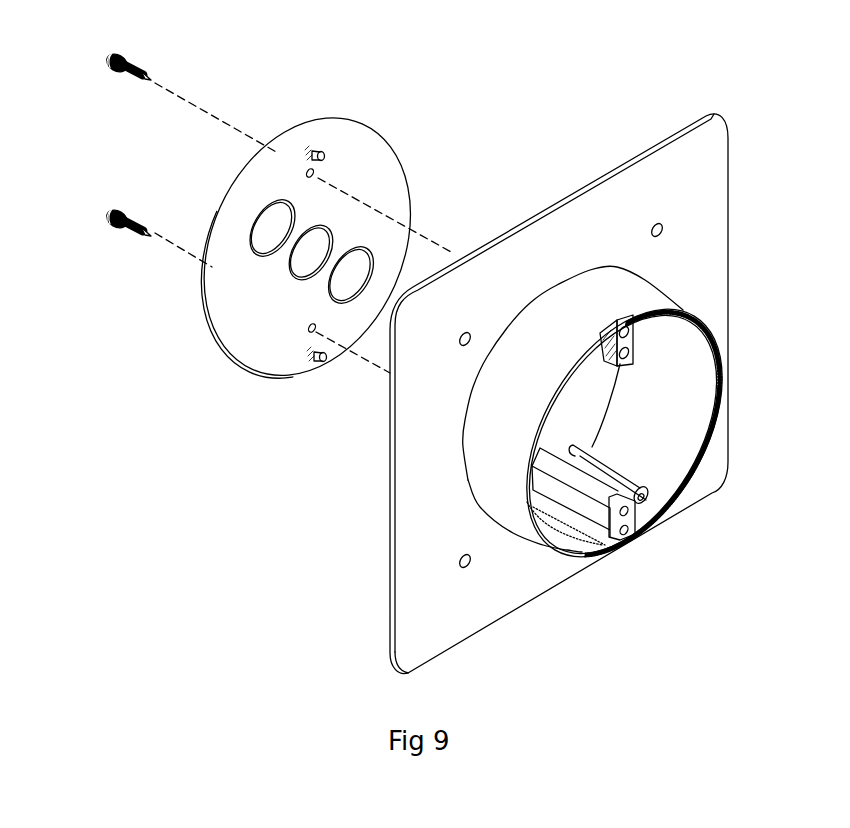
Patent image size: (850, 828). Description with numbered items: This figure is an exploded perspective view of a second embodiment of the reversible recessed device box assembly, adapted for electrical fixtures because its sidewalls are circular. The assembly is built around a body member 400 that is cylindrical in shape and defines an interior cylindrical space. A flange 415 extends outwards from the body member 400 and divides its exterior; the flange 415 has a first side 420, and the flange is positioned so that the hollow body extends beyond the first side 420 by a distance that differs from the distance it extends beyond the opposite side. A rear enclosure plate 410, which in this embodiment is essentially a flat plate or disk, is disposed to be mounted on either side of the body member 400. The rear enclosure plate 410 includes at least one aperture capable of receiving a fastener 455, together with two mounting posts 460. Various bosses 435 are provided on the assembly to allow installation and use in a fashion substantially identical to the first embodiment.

The body member 400 is at (575, 163).
The rear enclosure plate 410 is at (245, 388).
The flange 415 is at (432, 603).
The first side 420 is at (728, 233).
The bosses 435 is at (607, 468).
The fastener 455 is at (135, 213).
The mounting posts 460 is at (320, 157).